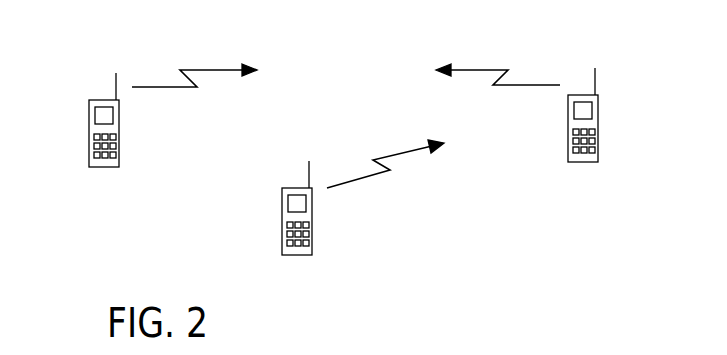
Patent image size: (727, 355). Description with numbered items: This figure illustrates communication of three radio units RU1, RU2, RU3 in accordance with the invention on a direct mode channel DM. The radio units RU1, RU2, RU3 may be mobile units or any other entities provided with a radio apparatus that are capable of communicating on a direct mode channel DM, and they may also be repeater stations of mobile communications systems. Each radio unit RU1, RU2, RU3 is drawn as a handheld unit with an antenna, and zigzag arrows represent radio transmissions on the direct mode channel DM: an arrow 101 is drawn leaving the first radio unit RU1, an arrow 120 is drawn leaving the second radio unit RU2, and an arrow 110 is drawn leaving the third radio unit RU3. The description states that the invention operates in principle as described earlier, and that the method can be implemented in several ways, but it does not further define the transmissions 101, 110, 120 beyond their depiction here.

The transmission from first radio unit 101 is at (185, 88).
The transmission from third radio unit 110 is at (473, 68).
The transmission from second radio unit 120 is at (385, 176).
The radio unit RU1 is at (104, 167).
The radio unit RU2 is at (295, 253).
The radio unit RU3 is at (582, 162).
The direct mode channel DM is at (420, 259).